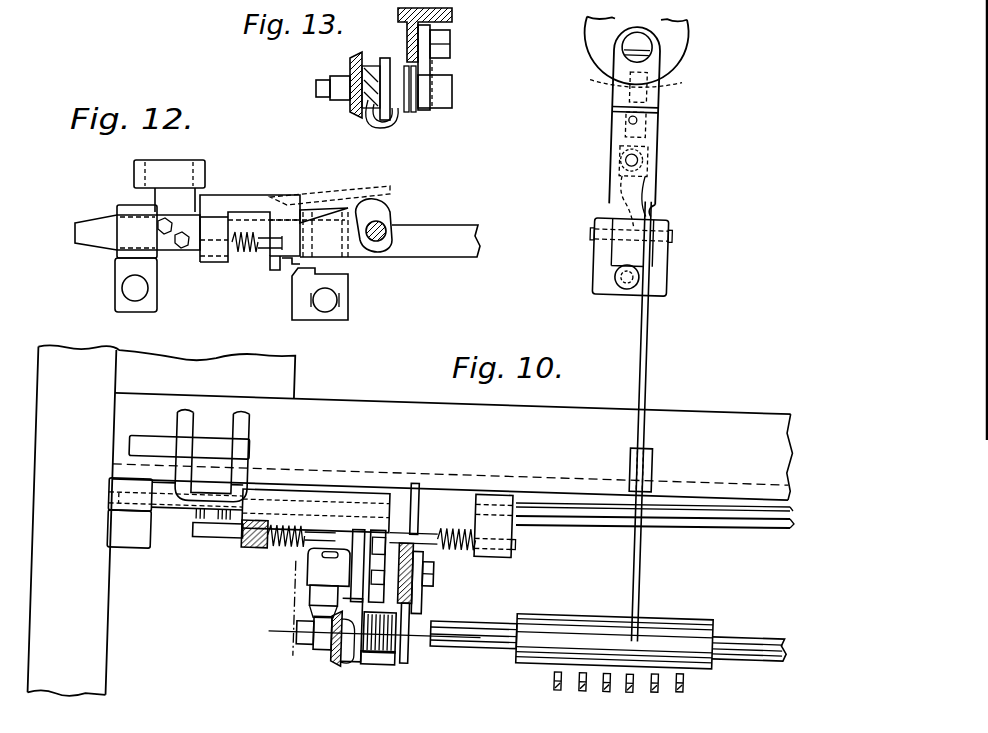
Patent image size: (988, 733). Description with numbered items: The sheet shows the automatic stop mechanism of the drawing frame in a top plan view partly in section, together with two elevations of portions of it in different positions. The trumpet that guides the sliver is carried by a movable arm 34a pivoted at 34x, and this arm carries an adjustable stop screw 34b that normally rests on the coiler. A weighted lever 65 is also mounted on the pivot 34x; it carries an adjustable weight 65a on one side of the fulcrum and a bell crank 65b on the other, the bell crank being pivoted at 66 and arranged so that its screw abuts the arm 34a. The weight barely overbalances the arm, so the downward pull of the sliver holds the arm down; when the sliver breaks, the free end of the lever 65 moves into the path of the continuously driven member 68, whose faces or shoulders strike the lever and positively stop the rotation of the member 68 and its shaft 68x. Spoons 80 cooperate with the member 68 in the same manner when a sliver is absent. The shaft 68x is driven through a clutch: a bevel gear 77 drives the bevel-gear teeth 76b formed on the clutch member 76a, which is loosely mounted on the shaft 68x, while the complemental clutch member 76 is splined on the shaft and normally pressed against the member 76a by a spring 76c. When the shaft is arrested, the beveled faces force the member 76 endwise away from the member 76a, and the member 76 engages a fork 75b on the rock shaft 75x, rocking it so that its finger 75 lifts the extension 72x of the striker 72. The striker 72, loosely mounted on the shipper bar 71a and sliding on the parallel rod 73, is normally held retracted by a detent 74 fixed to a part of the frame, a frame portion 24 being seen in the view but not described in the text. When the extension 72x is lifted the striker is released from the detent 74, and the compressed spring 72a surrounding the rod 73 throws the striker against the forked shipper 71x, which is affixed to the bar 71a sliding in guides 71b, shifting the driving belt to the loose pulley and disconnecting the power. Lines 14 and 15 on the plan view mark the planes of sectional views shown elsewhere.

In FIG. 10, the section line 14 is at (332, 508).
In FIG. 10, the section line 15 is at (485, 636).
In FIG. 10, the frame 24 is at (752, 400).
In FIG. 10, the trumpet arm 34a is at (649, 172).
In FIG. 10, the adjustable stop screw 34b is at (615, 160).
In FIG. 10, the pivot 34x is at (667, 220).
In FIG. 10, the weighted lever 65 is at (645, 345).
In FIG. 10, the adjustable weight 65a is at (654, 442).
In FIG. 10, the bell crank 65b is at (648, 83).
In FIG. 10, the bell crank pivot 66 is at (612, 115).
In FIG. 10, the continuously driven member 68 is at (585, 620).
In FIG. 10, the shaft 68x is at (755, 620).
In FIG. 12, the shipper bar 71a is at (90, 232).
In FIG. 10, the shipper bar 71a is at (197, 496).
In FIG. 12, the guides 71b is at (117, 212).
In FIG. 10, the guides 71b is at (112, 481).
In FIG. 12, the forked shipper 71x is at (206, 176).
In FIG. 10, the forked shipper 71x is at (178, 418).
In FIG. 12, the striker 72 is at (256, 200).
In FIG. 12, the spring 72a is at (241, 256).
In FIG. 10, the spring 72a is at (280, 540).
In FIG. 12, the extension 72x is at (324, 200).
In FIG. 12, the parallel rod 73 is at (280, 262).
In FIG. 10, the parallel rod 73 is at (200, 534).
In FIG. 12, the detent 74 is at (320, 274).
In FIG. 10, the detent 74 is at (495, 525).
In FIG. 12, the finger 75 is at (380, 210).
In FIG. 13, the fork 75b is at (400, 88).
In FIG. 10, the fork 75b is at (418, 560).
In FIG. 12, the rock shaft 75x is at (392, 236).
In FIG. 13, the clutch member 76 is at (384, 60).
In FIG. 10, the clutch member 76 is at (365, 660).
In FIG. 13, the complemental clutch member 76a is at (374, 114).
In FIG. 10, the complemental clutch member 76a is at (332, 662).
In FIG. 13, the bevel gear teeth 76b is at (351, 104).
In FIG. 10, the bevel gear teeth 76b is at (338, 650).
In FIG. 13, the spring 76c is at (414, 110).
In FIG. 10, the spring 76c is at (405, 612).
In FIG. 10, the bevel gear 77 is at (312, 601).
In FIG. 10, the spoon 80 is at (639, 678).